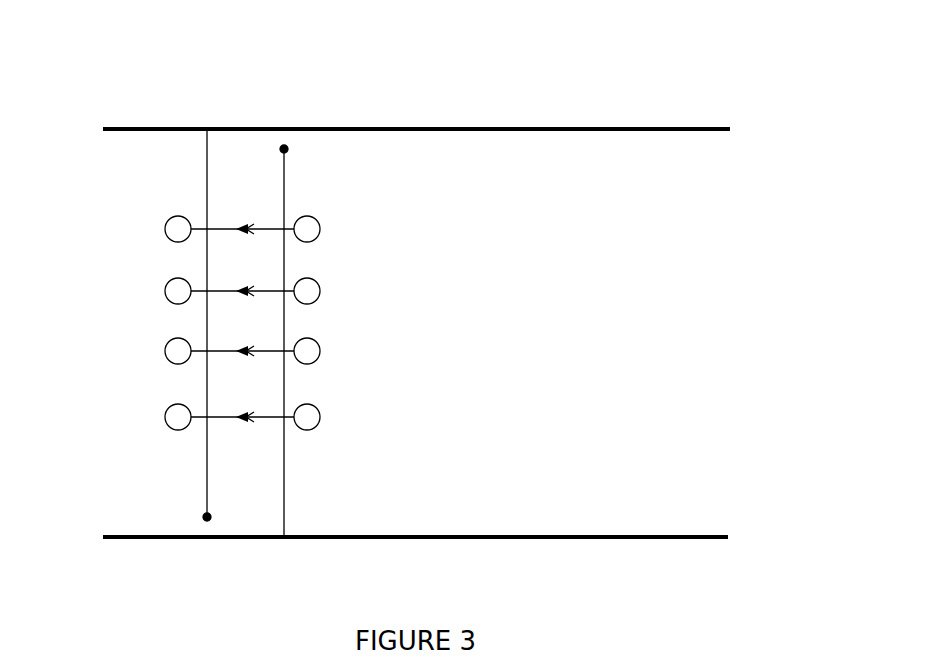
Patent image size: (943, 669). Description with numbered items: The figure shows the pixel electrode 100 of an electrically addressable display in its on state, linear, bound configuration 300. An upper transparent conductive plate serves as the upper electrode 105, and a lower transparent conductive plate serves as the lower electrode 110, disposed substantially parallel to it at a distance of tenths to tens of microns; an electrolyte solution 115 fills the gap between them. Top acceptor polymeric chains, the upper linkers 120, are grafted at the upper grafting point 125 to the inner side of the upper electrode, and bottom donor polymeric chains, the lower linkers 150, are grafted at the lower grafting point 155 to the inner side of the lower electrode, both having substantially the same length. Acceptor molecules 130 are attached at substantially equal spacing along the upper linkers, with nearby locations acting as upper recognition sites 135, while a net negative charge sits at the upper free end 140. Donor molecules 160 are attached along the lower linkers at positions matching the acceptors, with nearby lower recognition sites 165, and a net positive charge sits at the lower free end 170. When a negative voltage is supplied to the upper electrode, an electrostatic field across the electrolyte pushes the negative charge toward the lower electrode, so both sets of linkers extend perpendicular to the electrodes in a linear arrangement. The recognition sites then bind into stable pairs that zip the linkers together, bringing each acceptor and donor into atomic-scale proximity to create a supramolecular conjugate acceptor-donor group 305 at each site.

The pixel electrode 100 is at (150, 65).
The upper electrode S_U 105 is at (675, 134).
The lower electrode S_L 110 is at (688, 532).
The electrolyte solution 115 is at (705, 359).
The upper linkers L_U 120 is at (206, 185).
The grafting point H_U 125 is at (216, 120).
The acceptor molecules A 130 is at (177, 403).
The recognition sites R 135 is at (236, 428).
The free end of the upper linkers 140 is at (203, 514).
The lower linkers L_L 150 is at (287, 475).
The grafting point H_L 155 is at (282, 546).
The donor molecules D 160 is at (307, 403).
The recognition sites R' 165 is at (244, 428).
The free end of the lower linkers 170 is at (290, 152).
The on state, linear, bound configuration 300 is at (535, 318).
The supramolecular conjugate A-D group 305 is at (334, 229).